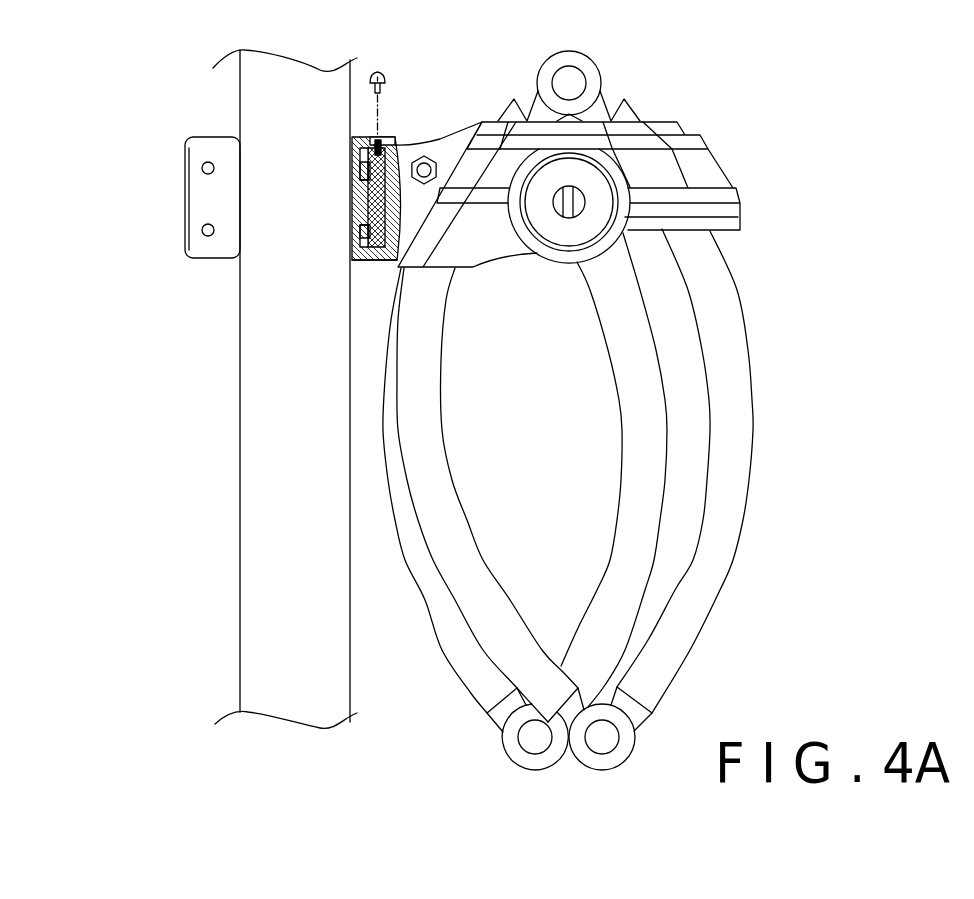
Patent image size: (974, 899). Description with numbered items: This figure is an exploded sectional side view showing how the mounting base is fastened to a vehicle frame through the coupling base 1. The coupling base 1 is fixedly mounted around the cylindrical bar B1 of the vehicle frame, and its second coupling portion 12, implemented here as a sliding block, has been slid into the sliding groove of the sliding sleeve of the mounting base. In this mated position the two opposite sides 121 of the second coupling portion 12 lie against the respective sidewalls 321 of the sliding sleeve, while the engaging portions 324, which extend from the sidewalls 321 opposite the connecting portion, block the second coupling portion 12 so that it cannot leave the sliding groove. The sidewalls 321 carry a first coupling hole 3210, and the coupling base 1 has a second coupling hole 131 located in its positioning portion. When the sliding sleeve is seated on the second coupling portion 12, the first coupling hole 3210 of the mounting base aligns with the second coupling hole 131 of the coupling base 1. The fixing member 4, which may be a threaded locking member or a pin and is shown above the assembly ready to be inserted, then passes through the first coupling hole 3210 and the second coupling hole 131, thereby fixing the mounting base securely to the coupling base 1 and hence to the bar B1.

The coupling base 1 is at (160, 209).
The second coupling portion 12 is at (373, 207).
The opposite sides 121 is at (365, 148).
The sidewalls 321 is at (380, 262).
The engaging portion 324 is at (365, 172).
The second coupling hole 131 is at (394, 145).
The first coupling hole 3210 is at (440, 139).
The fixing member 4 is at (378, 71).
The cylindrical bar B1 is at (250, 398).